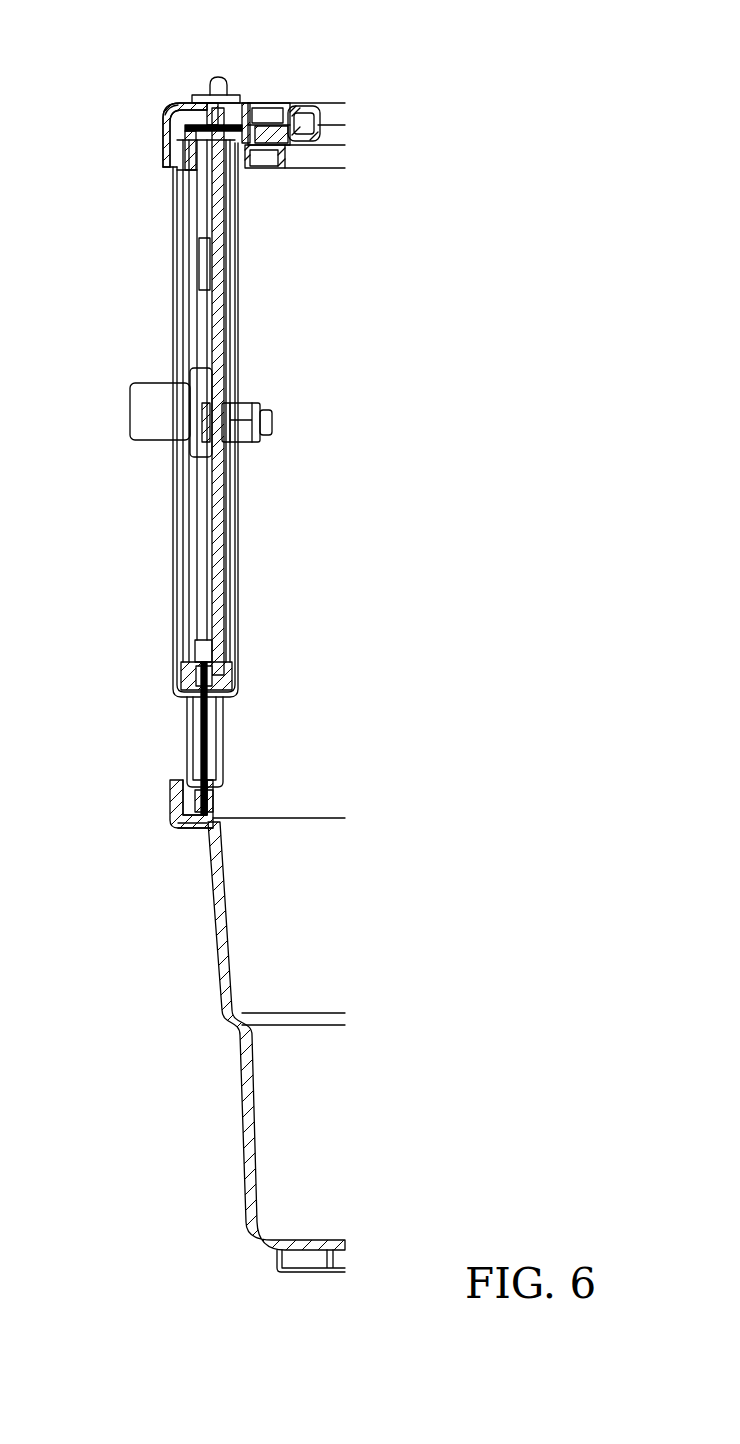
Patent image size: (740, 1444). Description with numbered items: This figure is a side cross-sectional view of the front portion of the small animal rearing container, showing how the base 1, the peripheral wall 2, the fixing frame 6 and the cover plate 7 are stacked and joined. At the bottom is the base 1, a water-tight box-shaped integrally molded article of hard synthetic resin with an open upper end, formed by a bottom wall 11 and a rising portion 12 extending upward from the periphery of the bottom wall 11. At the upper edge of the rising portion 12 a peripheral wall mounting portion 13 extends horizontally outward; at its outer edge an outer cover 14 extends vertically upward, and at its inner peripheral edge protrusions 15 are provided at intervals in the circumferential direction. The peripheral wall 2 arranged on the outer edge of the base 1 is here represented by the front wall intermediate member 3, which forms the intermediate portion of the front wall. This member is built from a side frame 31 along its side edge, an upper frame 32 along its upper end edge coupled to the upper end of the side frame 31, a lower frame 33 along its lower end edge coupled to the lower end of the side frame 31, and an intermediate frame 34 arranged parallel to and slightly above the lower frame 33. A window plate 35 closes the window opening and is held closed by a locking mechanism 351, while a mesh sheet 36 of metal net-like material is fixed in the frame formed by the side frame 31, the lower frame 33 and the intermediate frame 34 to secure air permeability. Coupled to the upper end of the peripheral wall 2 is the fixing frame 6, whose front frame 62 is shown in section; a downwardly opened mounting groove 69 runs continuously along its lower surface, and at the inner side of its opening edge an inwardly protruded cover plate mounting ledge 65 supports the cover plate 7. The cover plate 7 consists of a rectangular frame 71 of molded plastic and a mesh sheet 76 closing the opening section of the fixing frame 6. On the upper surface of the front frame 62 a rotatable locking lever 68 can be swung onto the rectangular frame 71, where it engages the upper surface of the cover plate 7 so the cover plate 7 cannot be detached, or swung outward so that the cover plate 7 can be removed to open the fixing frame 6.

The base 1 is at (250, 1238).
The bottom wall 11 is at (312, 1250).
The rising portion 12 is at (222, 1018).
The peripheral wall mounting portion 13 is at (195, 829).
The outer cover 14 is at (172, 808).
The protrusion 15 is at (212, 803).
The peripheral wall 2 is at (170, 633).
The front wall intermediate member 3 is at (170, 588).
The side frame 31 is at (173, 313).
The upper frame 32 is at (180, 158).
The lower frame 33 is at (192, 802).
The intermediate frame 34 is at (218, 678).
The window plate 35 is at (213, 293).
The locking mechanism 351 is at (255, 410).
The mesh sheet 36 is at (204, 747).
The fixing frame 6 is at (177, 100).
The front frame 62 is at (168, 112).
The cover plate mounting ledge 65 is at (268, 153).
The locking lever 68 is at (219, 78).
The mounting groove 69 is at (183, 133).
The cover plate 7 is at (347, 125).
The rectangular frame 71 is at (272, 104).
The mesh sheet 76 is at (330, 125).